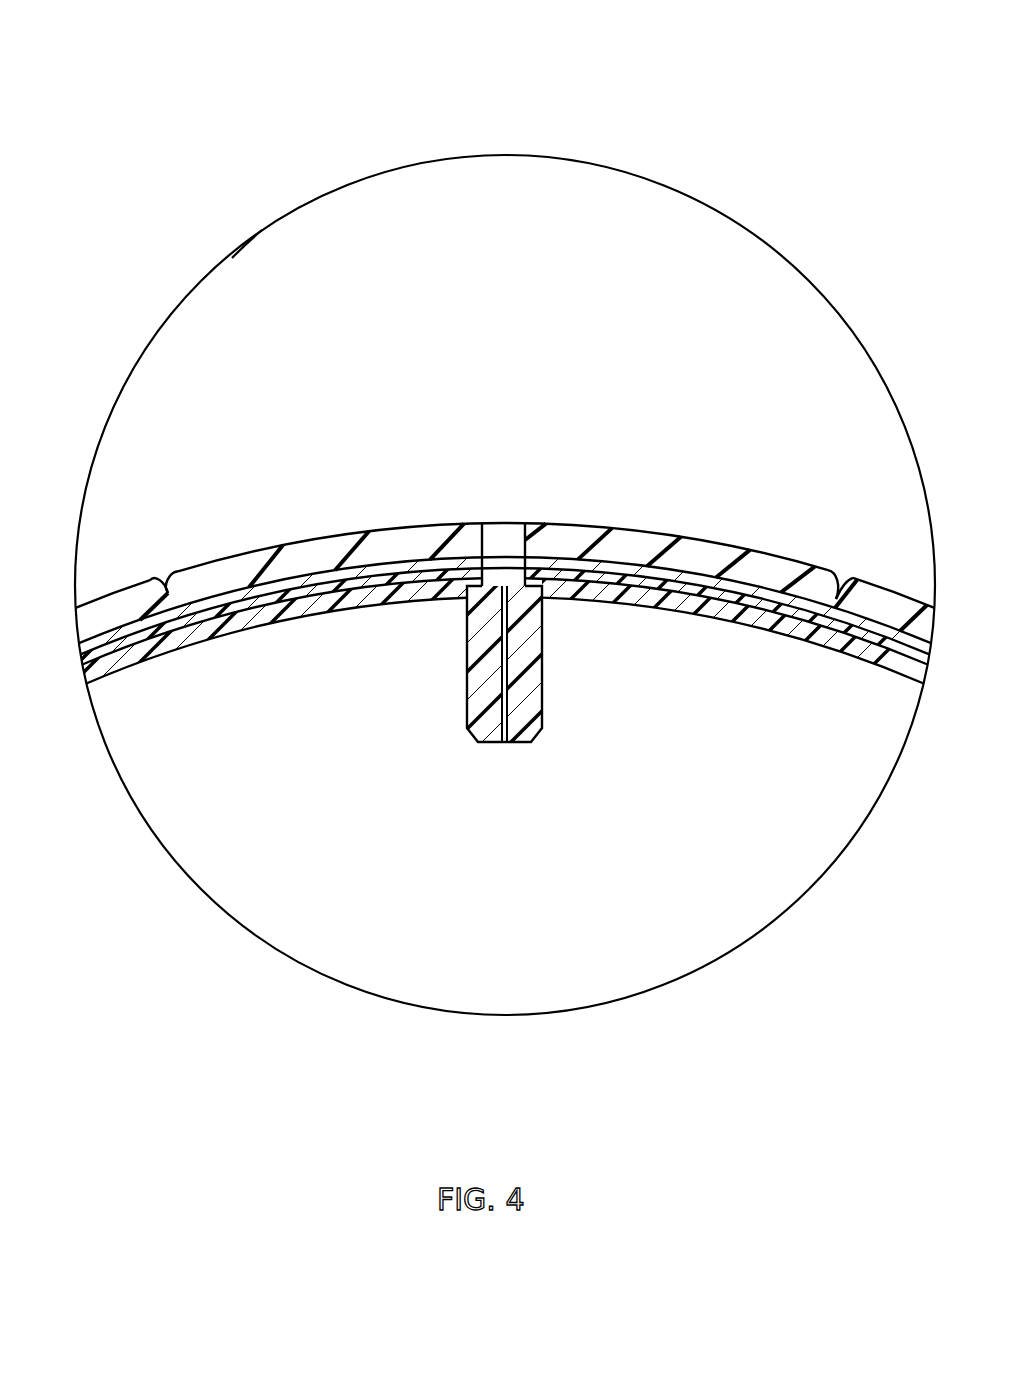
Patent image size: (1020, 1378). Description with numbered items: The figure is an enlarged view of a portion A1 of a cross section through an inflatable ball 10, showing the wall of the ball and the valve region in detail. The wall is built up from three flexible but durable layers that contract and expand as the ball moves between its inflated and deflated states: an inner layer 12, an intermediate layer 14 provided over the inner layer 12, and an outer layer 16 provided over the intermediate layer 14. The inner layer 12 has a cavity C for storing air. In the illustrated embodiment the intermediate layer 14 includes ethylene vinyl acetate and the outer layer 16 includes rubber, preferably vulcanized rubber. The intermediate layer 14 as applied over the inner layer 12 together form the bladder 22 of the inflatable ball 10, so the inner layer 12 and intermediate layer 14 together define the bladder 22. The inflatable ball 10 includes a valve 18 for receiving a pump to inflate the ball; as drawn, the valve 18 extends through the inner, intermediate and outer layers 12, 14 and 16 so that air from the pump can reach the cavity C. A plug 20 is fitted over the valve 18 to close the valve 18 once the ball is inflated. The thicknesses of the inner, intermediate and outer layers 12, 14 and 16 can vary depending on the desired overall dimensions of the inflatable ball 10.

The inflatable ball 10 is at (408, 95).
The inner layer 12 is at (107, 657).
The intermediate layer 14 is at (100, 628).
The outer layer 16 is at (399, 545).
The valve 18 is at (505, 744).
The plug 20 is at (507, 521).
The bladder 22 is at (72, 637).
The portion A1 is at (228, 252).
The cavity C is at (668, 932).